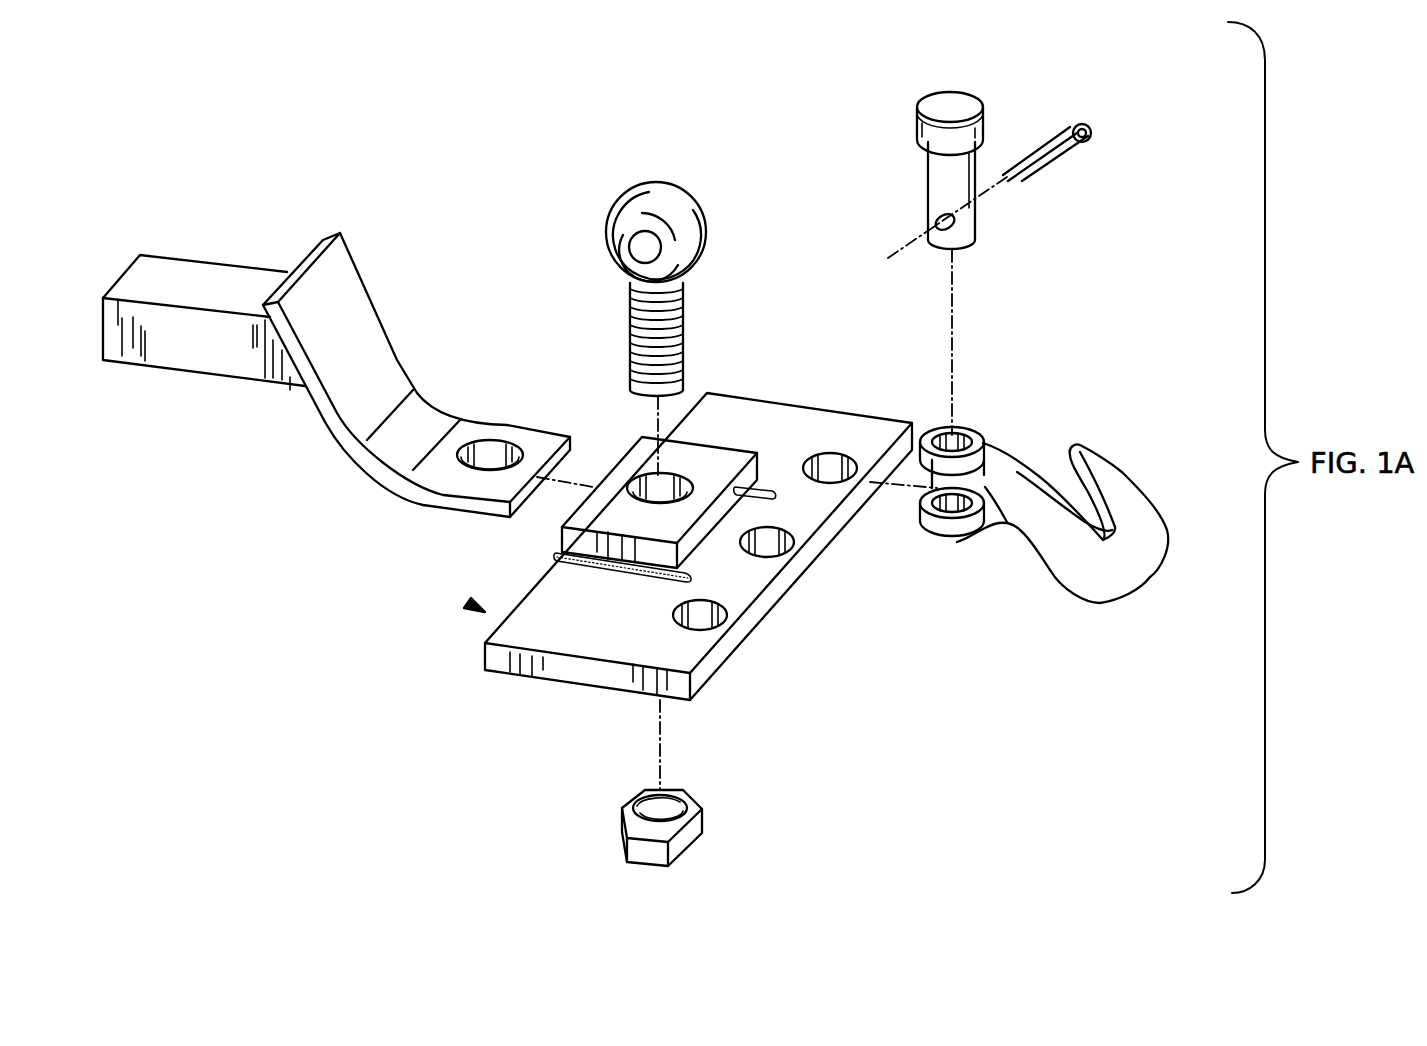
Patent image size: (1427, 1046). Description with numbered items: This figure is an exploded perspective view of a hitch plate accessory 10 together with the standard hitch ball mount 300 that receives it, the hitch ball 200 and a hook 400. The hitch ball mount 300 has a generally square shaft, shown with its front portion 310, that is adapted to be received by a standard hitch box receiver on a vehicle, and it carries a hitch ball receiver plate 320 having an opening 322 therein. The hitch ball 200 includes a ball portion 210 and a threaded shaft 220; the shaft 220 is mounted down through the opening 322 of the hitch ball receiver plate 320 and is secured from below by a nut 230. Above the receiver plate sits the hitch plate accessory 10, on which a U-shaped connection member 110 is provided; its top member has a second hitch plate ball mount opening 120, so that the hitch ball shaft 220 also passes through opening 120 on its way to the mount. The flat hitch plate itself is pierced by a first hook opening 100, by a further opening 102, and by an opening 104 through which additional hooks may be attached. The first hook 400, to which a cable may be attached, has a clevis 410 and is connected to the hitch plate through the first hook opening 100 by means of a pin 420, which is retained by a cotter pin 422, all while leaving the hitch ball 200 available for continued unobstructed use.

The hitch plate accessory 10 is at (470, 604).
The first hook opening 100 is at (838, 468).
The plate hole 102 is at (772, 545).
The opening 104 is at (705, 613).
The U-shaped connection member 110 is at (700, 452).
The second hitch plate ball mount opening 120 is at (645, 488).
The hitch ball 200 is at (617, 200).
The ball portion 210 is at (681, 215).
The threaded shaft 220 is at (630, 326).
The nut 230 is at (618, 827).
The hitch ball mount 300 is at (178, 268).
The shank tube 310 is at (163, 345).
The hitch ball receiver plate 320 is at (363, 316).
The opening 322 is at (488, 458).
The first hook 400 is at (1117, 588).
The clevis 410 is at (950, 535).
The pin 420 is at (943, 172).
The cotter pin 422 is at (1057, 157).